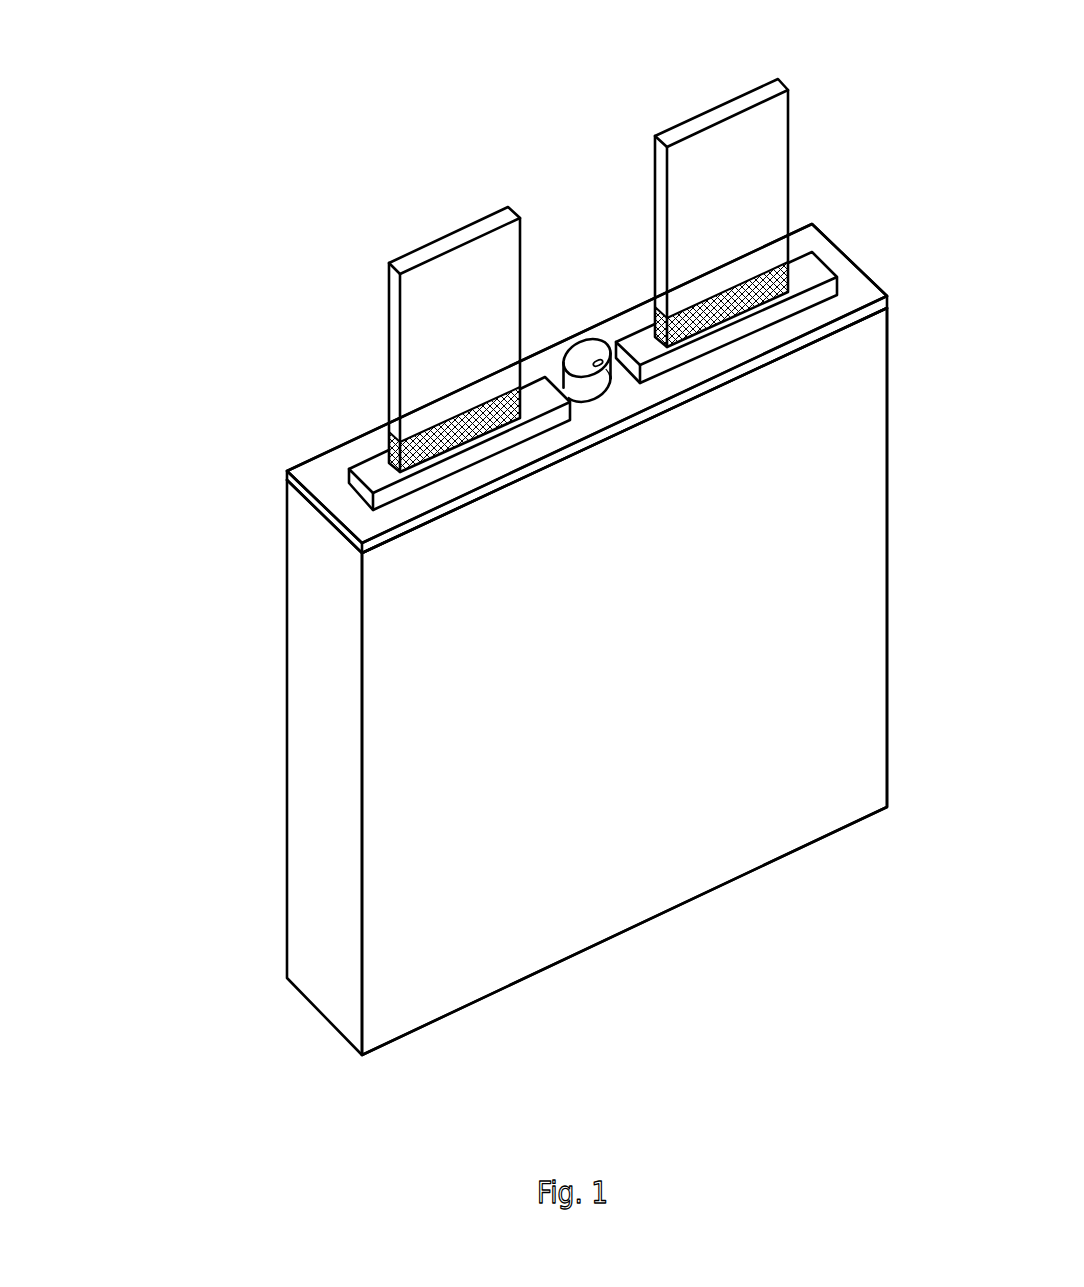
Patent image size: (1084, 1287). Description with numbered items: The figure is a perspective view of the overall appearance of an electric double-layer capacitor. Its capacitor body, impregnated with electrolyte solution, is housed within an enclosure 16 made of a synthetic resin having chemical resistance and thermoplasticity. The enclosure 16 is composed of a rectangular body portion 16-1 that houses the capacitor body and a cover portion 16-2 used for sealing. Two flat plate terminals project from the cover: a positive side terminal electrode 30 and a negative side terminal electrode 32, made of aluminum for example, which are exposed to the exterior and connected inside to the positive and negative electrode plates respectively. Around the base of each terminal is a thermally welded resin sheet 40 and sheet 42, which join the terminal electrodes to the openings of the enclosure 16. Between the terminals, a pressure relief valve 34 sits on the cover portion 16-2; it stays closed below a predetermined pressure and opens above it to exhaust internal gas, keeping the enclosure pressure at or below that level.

The enclosure 16 is at (233, 691).
The body portion 16-1 is at (652, 920).
The cover portion 16-2 is at (317, 477).
The positive side terminal electrode 30 is at (440, 307).
The negative side terminal electrode 32 is at (735, 167).
The pressure relief valve 34 is at (582, 348).
The sheet 40 is at (433, 432).
The sheet 42 is at (790, 276).